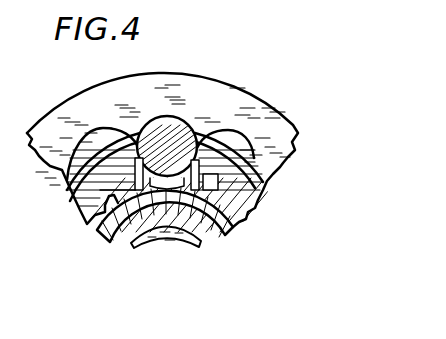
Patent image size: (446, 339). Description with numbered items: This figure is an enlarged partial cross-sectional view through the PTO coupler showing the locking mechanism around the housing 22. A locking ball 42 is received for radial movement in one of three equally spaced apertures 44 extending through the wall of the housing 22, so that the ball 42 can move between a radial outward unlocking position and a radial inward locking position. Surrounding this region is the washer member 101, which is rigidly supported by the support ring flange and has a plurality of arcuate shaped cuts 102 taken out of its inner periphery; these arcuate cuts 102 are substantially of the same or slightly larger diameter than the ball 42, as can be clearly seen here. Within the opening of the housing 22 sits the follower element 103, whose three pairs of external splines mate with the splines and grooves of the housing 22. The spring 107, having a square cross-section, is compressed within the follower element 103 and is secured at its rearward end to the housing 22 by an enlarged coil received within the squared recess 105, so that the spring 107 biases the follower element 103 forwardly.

The washer member 101 is at (197, 88).
The arcuate shaped cuts 102 is at (102, 127).
The locking elements, or balls 42 is at (159, 127).
The apertures 44 is at (212, 128).
The housing 22 is at (256, 203).
The follower element 103 is at (223, 230).
The squared recess 105 is at (72, 212).
The spring 107 is at (183, 247).